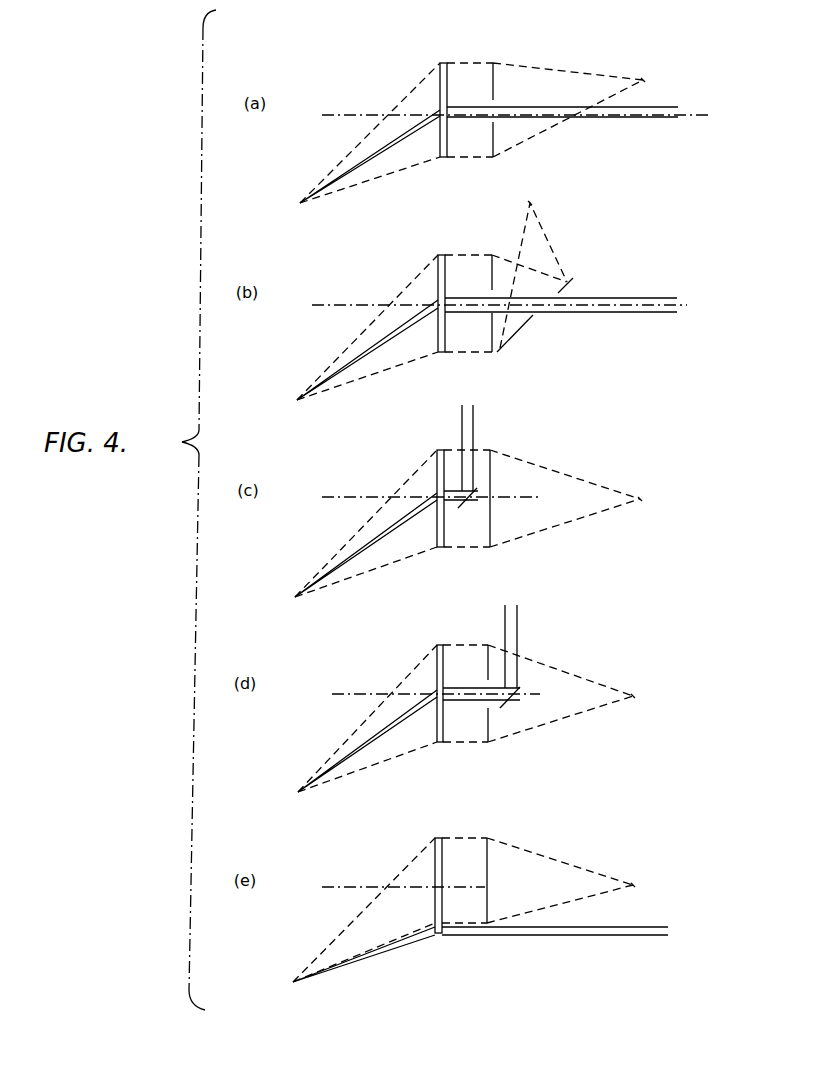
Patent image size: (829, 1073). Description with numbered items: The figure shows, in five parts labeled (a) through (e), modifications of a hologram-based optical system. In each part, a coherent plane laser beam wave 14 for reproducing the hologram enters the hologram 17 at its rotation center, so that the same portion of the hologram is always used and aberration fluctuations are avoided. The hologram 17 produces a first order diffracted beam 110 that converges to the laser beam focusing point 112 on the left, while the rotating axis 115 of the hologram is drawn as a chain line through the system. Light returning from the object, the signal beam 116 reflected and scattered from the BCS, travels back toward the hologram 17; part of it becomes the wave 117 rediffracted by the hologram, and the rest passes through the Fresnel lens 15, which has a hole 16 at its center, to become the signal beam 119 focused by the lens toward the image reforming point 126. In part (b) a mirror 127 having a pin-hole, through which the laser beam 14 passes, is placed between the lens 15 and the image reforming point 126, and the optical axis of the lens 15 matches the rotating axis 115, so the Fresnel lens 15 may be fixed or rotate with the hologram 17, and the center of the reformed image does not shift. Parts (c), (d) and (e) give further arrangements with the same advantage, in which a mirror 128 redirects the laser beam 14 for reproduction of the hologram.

The coherent plane laser beam wave 14 is at (632, 114).
The Fresnel lens 15 is at (496, 74).
The hole 16 is at (499, 124).
The hologram 17 is at (440, 68).
The first order diffracted beam 110 is at (364, 166).
The laser beam focusing point 112 is at (301, 200).
The rotating axis of the hologram 115 is at (349, 111).
The signal beam 116 is at (388, 120).
The rediffracted wave 117 is at (473, 75).
The focused signal beam 119 is at (576, 88).
The image reforming point 126 is at (643, 80).
The mirror having a pin-hole 127 is at (530, 322).
The mirror 128 is at (472, 497).